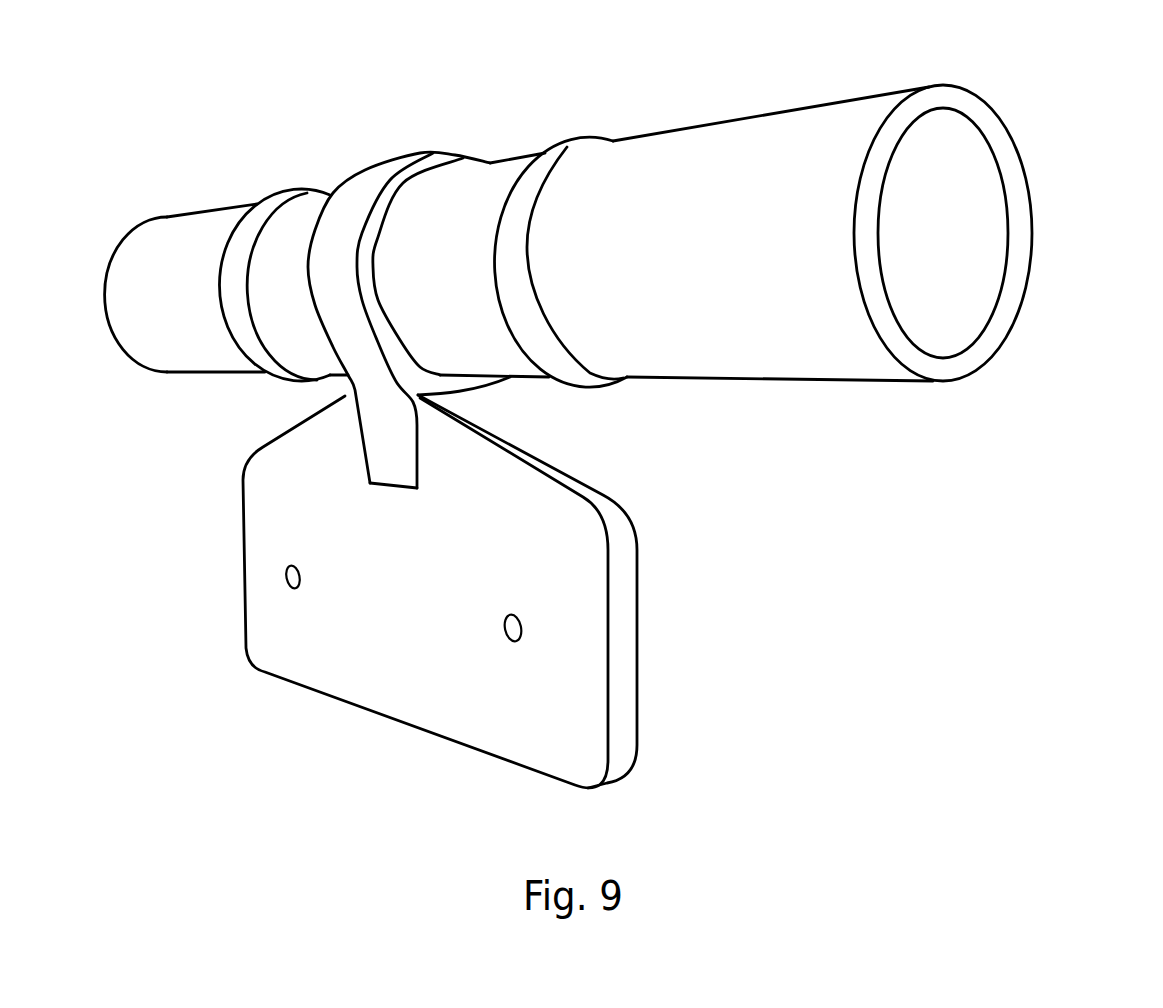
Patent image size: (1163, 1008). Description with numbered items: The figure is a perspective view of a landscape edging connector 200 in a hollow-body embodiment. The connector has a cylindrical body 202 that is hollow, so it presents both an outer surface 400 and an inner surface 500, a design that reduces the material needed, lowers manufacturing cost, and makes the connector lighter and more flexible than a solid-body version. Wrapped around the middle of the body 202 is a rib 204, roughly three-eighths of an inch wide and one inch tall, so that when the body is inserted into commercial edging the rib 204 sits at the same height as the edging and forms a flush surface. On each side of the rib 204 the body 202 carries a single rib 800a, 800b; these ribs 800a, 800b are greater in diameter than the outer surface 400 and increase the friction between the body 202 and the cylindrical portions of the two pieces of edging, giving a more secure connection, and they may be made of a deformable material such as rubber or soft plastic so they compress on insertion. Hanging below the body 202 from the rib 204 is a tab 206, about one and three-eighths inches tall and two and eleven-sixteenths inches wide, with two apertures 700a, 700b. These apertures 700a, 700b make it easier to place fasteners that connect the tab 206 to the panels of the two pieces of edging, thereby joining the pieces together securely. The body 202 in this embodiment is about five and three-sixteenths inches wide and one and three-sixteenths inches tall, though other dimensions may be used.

The connector 200 is at (345, 100).
The cylindrical body 202 is at (815, 133).
The rib 204 is at (430, 168).
The tab 206 is at (417, 615).
The outer surface 400 is at (1000, 167).
The inner surface 500 is at (963, 241).
The aperture 700a is at (292, 568).
The aperture 700b is at (510, 627).
The rib 800a is at (282, 203).
The rib 800b is at (563, 150).